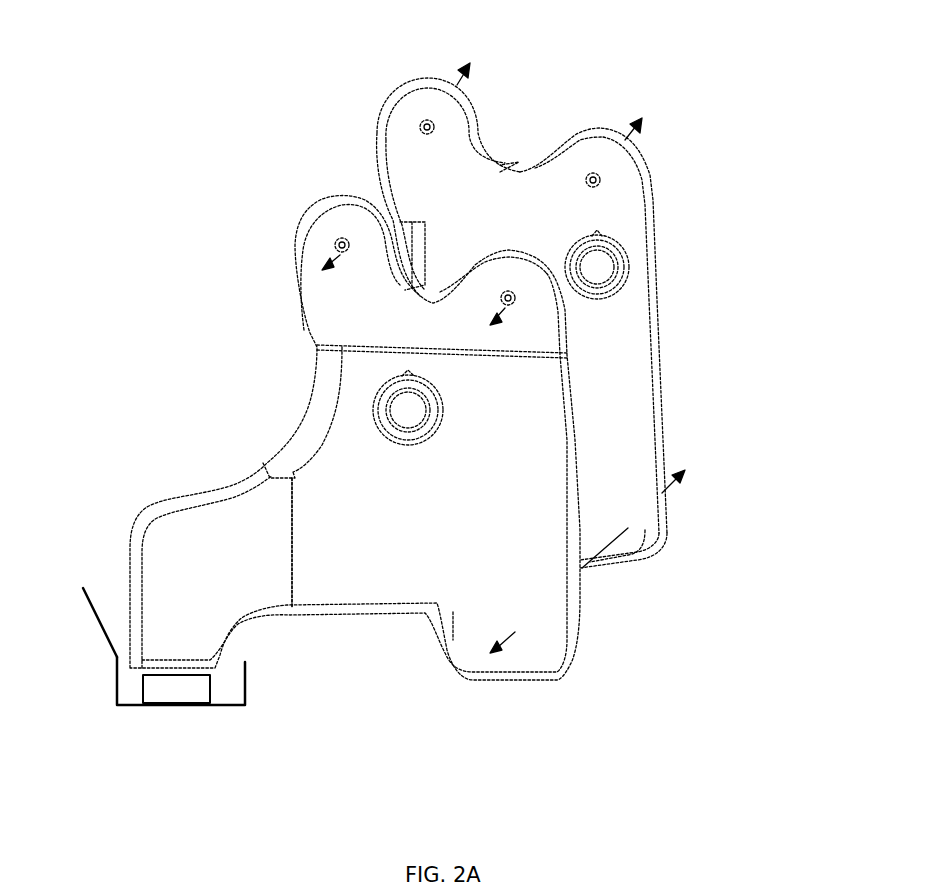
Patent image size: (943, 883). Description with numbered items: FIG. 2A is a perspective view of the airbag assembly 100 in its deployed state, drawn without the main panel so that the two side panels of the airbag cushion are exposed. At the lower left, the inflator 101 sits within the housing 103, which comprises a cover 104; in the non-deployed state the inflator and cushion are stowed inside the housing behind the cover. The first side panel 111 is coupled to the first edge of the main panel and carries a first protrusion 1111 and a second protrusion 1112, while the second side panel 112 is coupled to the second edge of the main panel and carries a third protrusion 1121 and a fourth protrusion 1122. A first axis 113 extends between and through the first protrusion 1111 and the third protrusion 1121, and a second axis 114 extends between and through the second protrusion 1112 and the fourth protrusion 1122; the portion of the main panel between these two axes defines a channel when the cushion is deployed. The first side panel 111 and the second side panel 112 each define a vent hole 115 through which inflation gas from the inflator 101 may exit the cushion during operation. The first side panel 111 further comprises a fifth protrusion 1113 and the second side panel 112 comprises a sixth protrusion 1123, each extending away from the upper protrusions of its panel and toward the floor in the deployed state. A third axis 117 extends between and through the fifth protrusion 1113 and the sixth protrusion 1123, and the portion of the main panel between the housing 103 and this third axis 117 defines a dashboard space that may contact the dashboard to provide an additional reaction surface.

The airbag assembly 100 is at (130, 418).
The inflator 101 is at (177, 690).
The housing 103 is at (131, 707).
The cover 104 is at (100, 625).
The first side panel 111 is at (355, 568).
The first protrusion 1111 is at (338, 223).
The second protrusion 1112 is at (530, 292).
The fifth protrusion 1113 is at (542, 650).
The second side panel 112 is at (620, 402).
The third protrusion 1121 is at (418, 105).
The fourth protrusion 1122 is at (592, 155).
The sixth protrusion 1123 is at (633, 548).
The first axis 113 is at (427, 127).
The second axis 114 is at (593, 180).
The vent hole 115 is at (408, 410).
The third axis 117 is at (595, 555).